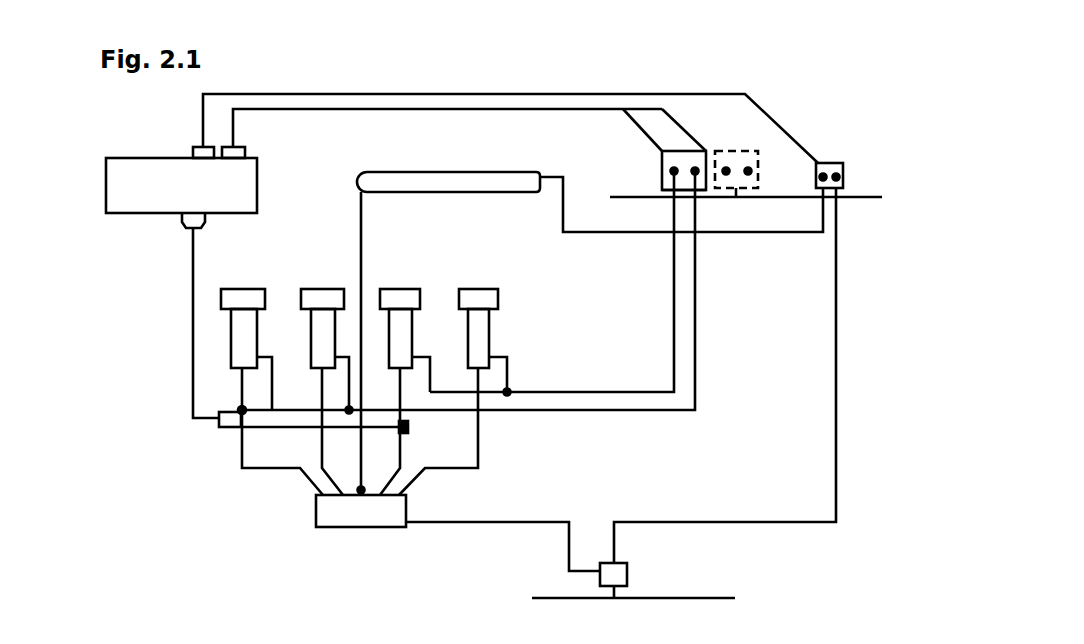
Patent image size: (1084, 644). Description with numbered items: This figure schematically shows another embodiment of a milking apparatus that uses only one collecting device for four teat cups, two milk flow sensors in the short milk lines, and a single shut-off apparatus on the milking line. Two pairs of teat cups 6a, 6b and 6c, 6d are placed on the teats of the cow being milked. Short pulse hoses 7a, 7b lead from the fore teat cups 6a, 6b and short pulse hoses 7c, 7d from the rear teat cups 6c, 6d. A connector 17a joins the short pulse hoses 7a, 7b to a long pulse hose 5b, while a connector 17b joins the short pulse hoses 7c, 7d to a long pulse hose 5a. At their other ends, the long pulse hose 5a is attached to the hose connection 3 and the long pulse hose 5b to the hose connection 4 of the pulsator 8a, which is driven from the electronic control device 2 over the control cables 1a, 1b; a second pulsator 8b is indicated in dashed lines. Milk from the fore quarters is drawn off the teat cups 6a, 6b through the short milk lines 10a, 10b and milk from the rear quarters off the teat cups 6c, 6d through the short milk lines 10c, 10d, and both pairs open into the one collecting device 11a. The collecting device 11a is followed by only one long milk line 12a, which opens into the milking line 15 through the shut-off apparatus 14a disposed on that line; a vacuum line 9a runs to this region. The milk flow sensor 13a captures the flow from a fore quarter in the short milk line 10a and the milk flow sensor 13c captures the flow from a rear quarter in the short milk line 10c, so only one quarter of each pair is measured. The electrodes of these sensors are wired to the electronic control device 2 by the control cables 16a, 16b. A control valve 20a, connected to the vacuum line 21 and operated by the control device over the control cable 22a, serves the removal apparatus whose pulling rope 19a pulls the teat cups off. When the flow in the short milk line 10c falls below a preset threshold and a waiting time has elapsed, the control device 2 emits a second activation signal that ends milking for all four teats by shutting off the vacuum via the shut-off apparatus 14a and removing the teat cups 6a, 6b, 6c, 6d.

The electronic control device 2 is at (136, 166).
The control cable 1a is at (650, 139).
The control cable 1b is at (700, 118).
The hose connection pulsator L 3 is at (667, 173).
The hose connection pulsator R 4 is at (696, 178).
The long pulse hose 5a is at (673, 262).
The long pulse hose 5b is at (694, 282).
The teat cup 6a is at (257, 294).
The teat cup 6b is at (323, 296).
The teat cup 6c is at (397, 296).
The teat cup 6d is at (478, 296).
The short pulse hose 7a is at (275, 396).
The short pulse hose 7b is at (352, 396).
The short pulse hose 7c is at (433, 387).
The short pulse hose 7d is at (509, 388).
The pulsator 8a is at (672, 184).
The pulsator 8b is at (735, 158).
The vacuum line 9a is at (683, 522).
The short milk line 10a is at (242, 450).
The short milk line 10b is at (318, 432).
The short milk line 10c is at (392, 478).
The short milk line 10d is at (479, 430).
The volumetric collecting device 11a is at (346, 520).
The long milk line 12a is at (498, 518).
The milk flow sensor 13a is at (240, 408).
The milk flow sensor 13c is at (420, 429).
The shut-off apparatus 14a is at (627, 576).
The milking line 15 is at (681, 598).
The control cable 16a is at (217, 412).
The control cable 16b is at (218, 428).
The connector pulse hose 17a is at (349, 413).
The connector pulse hose 17b is at (508, 395).
The pulling rope 19a is at (363, 240).
The control valve 20a is at (831, 163).
The vacuum line 21 is at (856, 196).
The control cable 22a is at (779, 131).